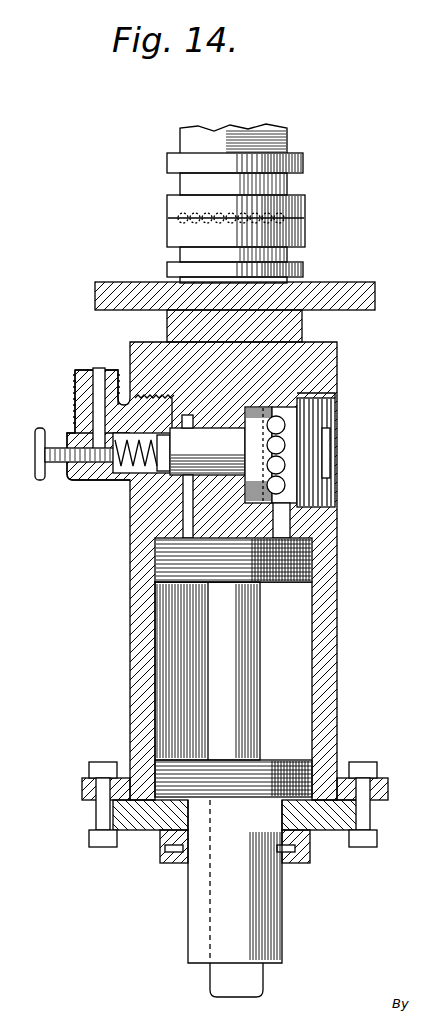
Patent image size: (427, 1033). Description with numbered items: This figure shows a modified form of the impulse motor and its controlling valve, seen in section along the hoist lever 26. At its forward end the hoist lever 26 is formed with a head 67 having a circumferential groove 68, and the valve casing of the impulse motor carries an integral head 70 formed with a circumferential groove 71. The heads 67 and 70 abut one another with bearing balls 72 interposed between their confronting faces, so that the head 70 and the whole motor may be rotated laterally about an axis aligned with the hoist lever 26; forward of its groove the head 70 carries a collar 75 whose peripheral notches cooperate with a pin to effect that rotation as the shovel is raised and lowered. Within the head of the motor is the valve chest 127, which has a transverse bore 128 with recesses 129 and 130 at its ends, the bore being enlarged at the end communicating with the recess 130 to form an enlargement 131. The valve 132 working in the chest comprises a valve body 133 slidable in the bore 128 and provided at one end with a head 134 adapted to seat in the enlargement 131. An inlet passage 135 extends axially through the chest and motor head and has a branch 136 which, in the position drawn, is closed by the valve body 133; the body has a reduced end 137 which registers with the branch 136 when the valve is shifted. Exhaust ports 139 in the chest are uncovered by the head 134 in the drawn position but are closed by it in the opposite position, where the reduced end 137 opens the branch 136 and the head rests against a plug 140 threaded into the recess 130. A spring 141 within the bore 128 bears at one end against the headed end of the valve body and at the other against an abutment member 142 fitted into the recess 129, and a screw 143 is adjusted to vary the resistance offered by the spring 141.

The hoist lever 26 is at (298, 136).
The head 67 is at (301, 172).
The circumferential groove 68 is at (300, 190).
The integral head 70 is at (306, 233).
The circumferential groove 71 is at (300, 257).
The bearing balls 72 is at (307, 207).
The collar 75 is at (333, 283).
The valve chest 127 is at (308, 384).
The transverse bore 128 is at (188, 516).
The recess 129 is at (150, 397).
The recess 130 is at (338, 402).
The enlargement 131 is at (250, 405).
The valve 132 is at (160, 472).
The valve body 133 is at (205, 454).
The head 134 is at (338, 415).
The inlet passage 135 is at (112, 481).
The branch 136 is at (137, 558).
The reduced end 137 is at (195, 418).
The exhaust ports 139 is at (281, 414).
The plug 140 is at (308, 495).
The spring 141 is at (113, 425).
The abutment member 142 is at (78, 433).
The screw 143 is at (40, 474).